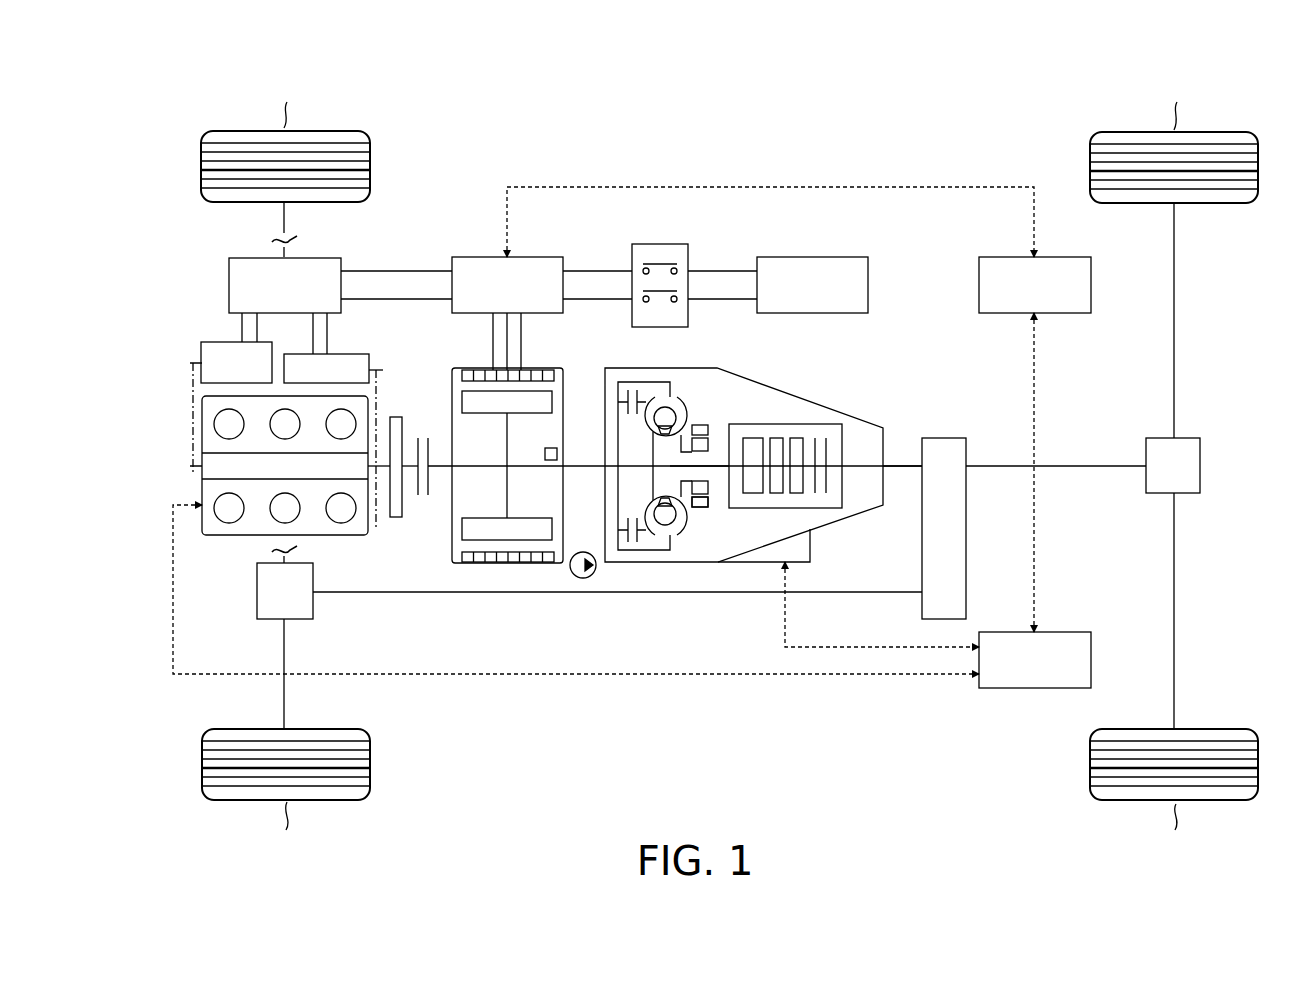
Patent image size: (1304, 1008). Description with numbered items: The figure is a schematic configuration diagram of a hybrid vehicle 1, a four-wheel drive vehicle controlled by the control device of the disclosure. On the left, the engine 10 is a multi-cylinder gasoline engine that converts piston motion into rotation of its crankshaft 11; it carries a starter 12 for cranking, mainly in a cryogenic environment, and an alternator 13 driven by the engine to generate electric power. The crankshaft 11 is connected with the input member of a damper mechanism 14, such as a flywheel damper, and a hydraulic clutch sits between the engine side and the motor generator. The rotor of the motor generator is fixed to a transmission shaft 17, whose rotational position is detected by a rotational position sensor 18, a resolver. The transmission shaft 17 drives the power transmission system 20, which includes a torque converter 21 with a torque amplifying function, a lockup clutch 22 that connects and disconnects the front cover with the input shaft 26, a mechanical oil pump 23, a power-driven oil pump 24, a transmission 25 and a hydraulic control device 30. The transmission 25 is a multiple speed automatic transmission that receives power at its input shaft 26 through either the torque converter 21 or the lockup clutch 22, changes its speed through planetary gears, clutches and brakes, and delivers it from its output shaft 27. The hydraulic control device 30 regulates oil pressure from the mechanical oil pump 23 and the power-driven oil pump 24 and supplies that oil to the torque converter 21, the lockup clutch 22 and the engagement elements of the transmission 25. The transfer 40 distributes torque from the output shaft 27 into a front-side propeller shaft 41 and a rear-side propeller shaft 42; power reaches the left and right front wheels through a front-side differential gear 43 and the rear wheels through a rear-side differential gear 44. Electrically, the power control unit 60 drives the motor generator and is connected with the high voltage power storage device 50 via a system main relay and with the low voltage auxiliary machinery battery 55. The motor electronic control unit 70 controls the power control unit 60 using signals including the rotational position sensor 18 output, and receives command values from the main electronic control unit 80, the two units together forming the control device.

The hybrid vehicle 1 is at (903, 132).
The engine 10 is at (240, 538).
The crankshaft 11 is at (380, 470).
The starter 12 is at (352, 354).
The alternator 13 is at (210, 342).
The damper mechanism 14 is at (396, 412).
The transmission shaft 17 is at (582, 470).
The rotational position sensor 18 is at (560, 446).
The power transmission system 20 is at (864, 418).
The torque converter 21 is at (682, 392).
The lockup clutch 22 is at (644, 552).
The mechanical oil pump 23 is at (708, 512).
The power-driven oil pump 24 is at (583, 580).
The transmission 25 is at (812, 422).
The input shaft 26 is at (716, 464).
The output shaft 27 is at (900, 470).
The hydraulic control device 30 is at (812, 546).
The transfer 40 is at (950, 438).
The front-side propeller shaft 41 is at (856, 594).
The rear-side propeller shaft 42 is at (1066, 468).
The front-side differential gear 43 is at (256, 602).
The rear-side differential gear 44 is at (1202, 464).
The power storage device 50 is at (841, 258).
The auxiliary machinery battery 55 is at (248, 258).
The power control unit 60 is at (540, 258).
The motor electronic control unit 70 is at (1002, 258).
The main electronic control unit 80 is at (1068, 634).